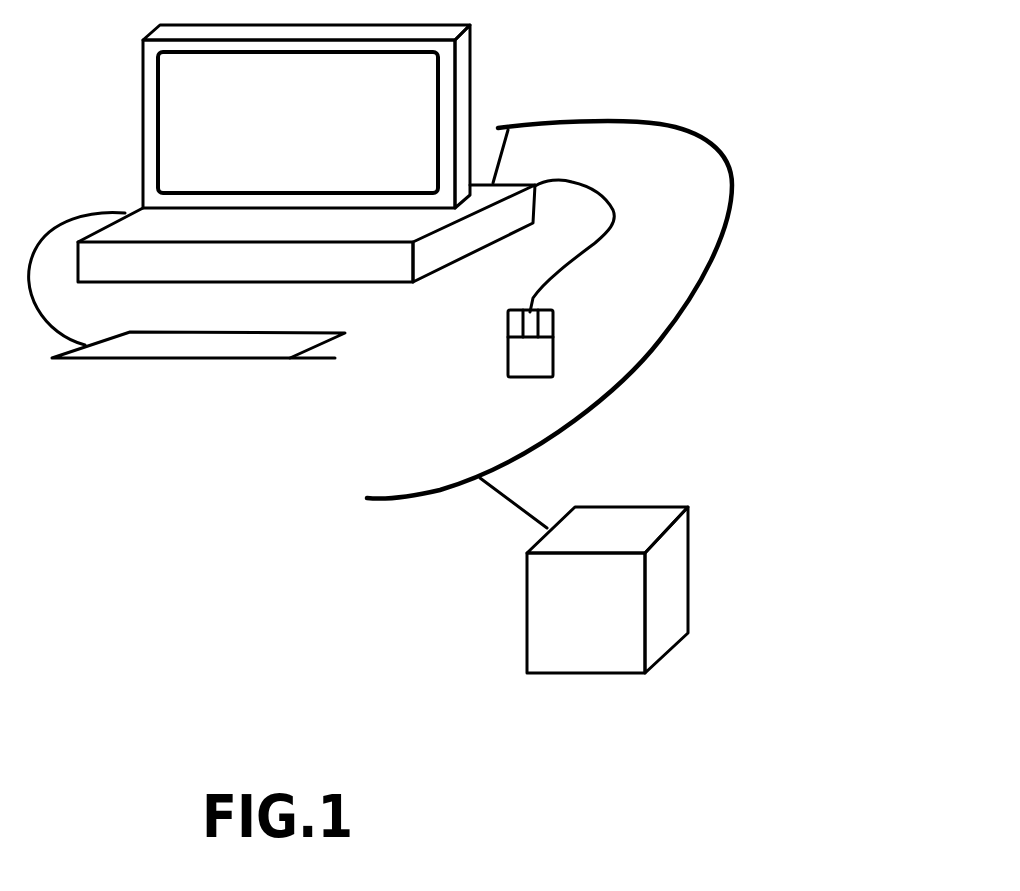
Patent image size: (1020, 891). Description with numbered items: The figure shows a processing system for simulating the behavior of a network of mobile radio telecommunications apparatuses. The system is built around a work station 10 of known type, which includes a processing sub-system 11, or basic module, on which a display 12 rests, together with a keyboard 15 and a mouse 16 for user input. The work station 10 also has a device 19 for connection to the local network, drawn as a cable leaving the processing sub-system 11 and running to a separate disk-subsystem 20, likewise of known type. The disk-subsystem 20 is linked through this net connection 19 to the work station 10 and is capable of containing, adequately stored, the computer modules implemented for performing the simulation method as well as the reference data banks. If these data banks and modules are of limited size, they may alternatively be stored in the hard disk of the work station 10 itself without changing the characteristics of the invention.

The work station 10 is at (172, 488).
The processing sub-system 11 is at (442, 258).
The display 12 is at (177, 90).
The keyboard 15 is at (183, 358).
The mouse 16 is at (540, 355).
The device for connection to the local network 19 is at (650, 122).
The disk-subsystem 20 is at (613, 655).